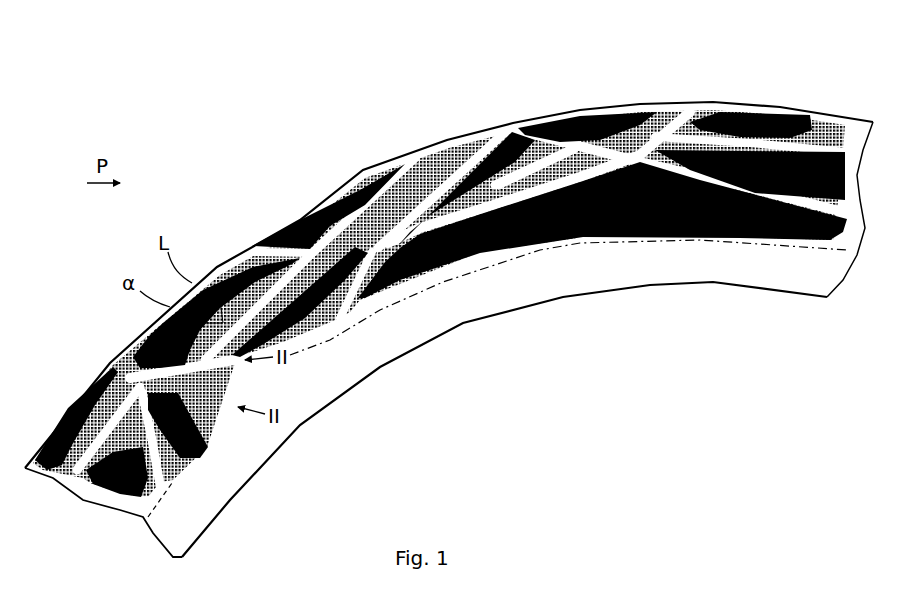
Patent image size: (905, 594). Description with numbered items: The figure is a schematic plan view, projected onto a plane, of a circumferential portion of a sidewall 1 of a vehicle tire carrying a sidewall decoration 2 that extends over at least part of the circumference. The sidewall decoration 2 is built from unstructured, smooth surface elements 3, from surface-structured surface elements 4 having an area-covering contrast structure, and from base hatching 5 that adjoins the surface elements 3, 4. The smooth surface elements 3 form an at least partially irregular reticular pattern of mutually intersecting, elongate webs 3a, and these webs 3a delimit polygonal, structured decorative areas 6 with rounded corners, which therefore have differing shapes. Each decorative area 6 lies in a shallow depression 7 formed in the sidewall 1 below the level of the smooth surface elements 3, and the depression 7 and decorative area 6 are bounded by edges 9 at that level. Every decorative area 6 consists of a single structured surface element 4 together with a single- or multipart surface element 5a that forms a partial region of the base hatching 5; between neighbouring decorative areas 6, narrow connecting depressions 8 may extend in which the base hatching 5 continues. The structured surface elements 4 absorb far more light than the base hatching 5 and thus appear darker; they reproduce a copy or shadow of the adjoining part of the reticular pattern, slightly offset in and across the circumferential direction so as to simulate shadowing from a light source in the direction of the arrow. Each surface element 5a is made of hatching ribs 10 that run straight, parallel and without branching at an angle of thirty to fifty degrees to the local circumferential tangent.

The sidewall 1 is at (653, 92).
The sidewall decoration 2 is at (87, 517).
The smooth surface elements 3 is at (360, 172).
The webs 3a is at (357, 276).
The structured surface elements 4 is at (455, 240).
The base hatching 5 is at (525, 227).
The surface element 5a is at (490, 252).
The decorative areas 6 is at (423, 278).
The depressions 7 is at (555, 222).
The connecting depressions 8 is at (502, 123).
The edges 9 is at (590, 213).
The hatching ribs 10 is at (233, 270).